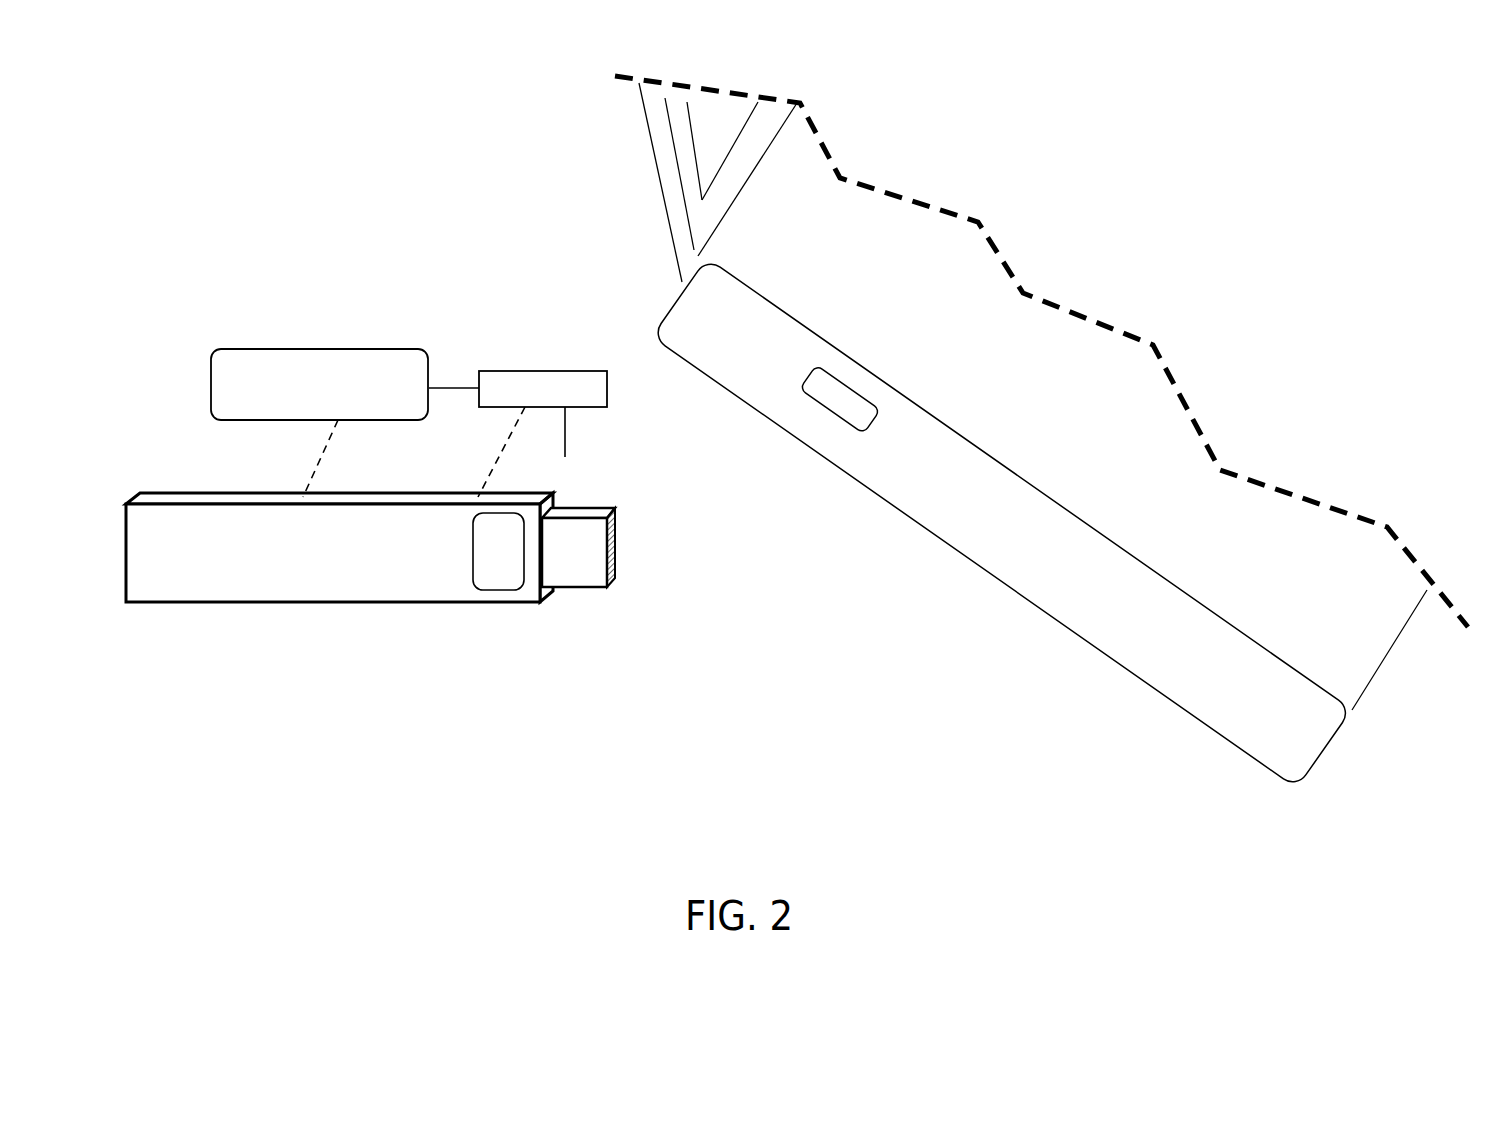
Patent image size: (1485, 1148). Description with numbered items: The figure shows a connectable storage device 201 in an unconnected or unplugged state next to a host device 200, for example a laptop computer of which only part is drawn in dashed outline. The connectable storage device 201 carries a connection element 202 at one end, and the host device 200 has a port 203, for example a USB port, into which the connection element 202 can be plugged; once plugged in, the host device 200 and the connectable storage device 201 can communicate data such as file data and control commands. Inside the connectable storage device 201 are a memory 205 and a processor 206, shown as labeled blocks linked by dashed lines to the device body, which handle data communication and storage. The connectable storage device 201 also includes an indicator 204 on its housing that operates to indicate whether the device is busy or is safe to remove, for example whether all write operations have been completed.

The host device 200 is at (949, 512).
The connectable storage device 201 is at (207, 494).
The connection element 202 is at (595, 582).
The port 203 is at (836, 395).
The indicator 204 is at (524, 583).
The memory 205 is at (385, 348).
The processor 206 is at (563, 370).